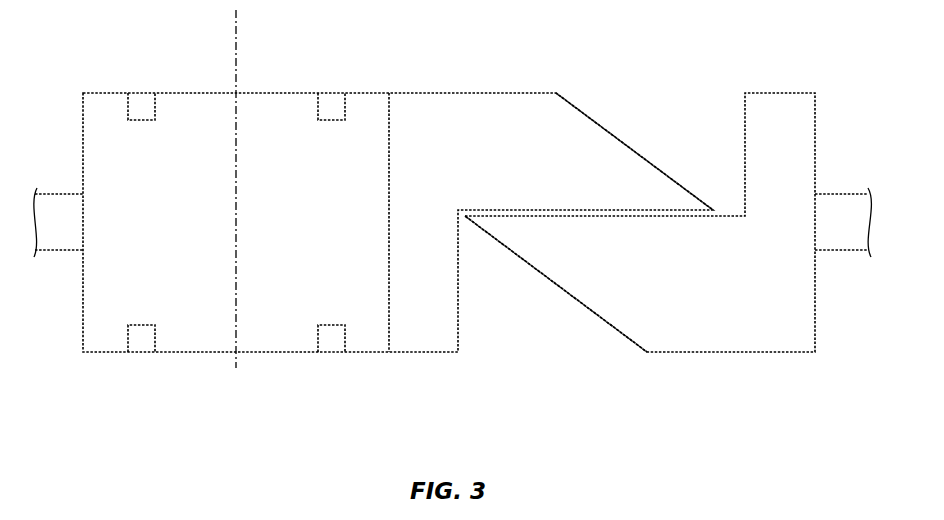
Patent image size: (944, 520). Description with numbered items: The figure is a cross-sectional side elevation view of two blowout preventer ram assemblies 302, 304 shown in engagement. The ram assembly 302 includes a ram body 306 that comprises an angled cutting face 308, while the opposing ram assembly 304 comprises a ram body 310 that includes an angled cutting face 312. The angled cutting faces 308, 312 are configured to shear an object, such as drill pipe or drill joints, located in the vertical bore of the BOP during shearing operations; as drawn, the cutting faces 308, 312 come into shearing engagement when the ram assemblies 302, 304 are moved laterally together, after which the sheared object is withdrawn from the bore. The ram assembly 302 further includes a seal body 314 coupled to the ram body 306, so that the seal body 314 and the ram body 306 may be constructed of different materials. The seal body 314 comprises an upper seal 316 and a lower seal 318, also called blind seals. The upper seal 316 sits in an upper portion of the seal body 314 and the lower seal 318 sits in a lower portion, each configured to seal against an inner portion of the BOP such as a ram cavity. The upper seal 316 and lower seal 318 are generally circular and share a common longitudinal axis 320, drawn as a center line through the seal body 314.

The ram assembly 302 is at (434, 42).
The ram assembly 304 is at (724, 380).
The ram body 306 is at (506, 157).
The angled cutting face 308 is at (597, 118).
The ram body 310 is at (694, 286).
The angled cutting face 312 is at (554, 283).
The seal body 314 is at (259, 222).
The upper seal 316 is at (141, 92).
The lower seal 318 is at (142, 353).
The longitudinal axis 320 is at (237, 237).